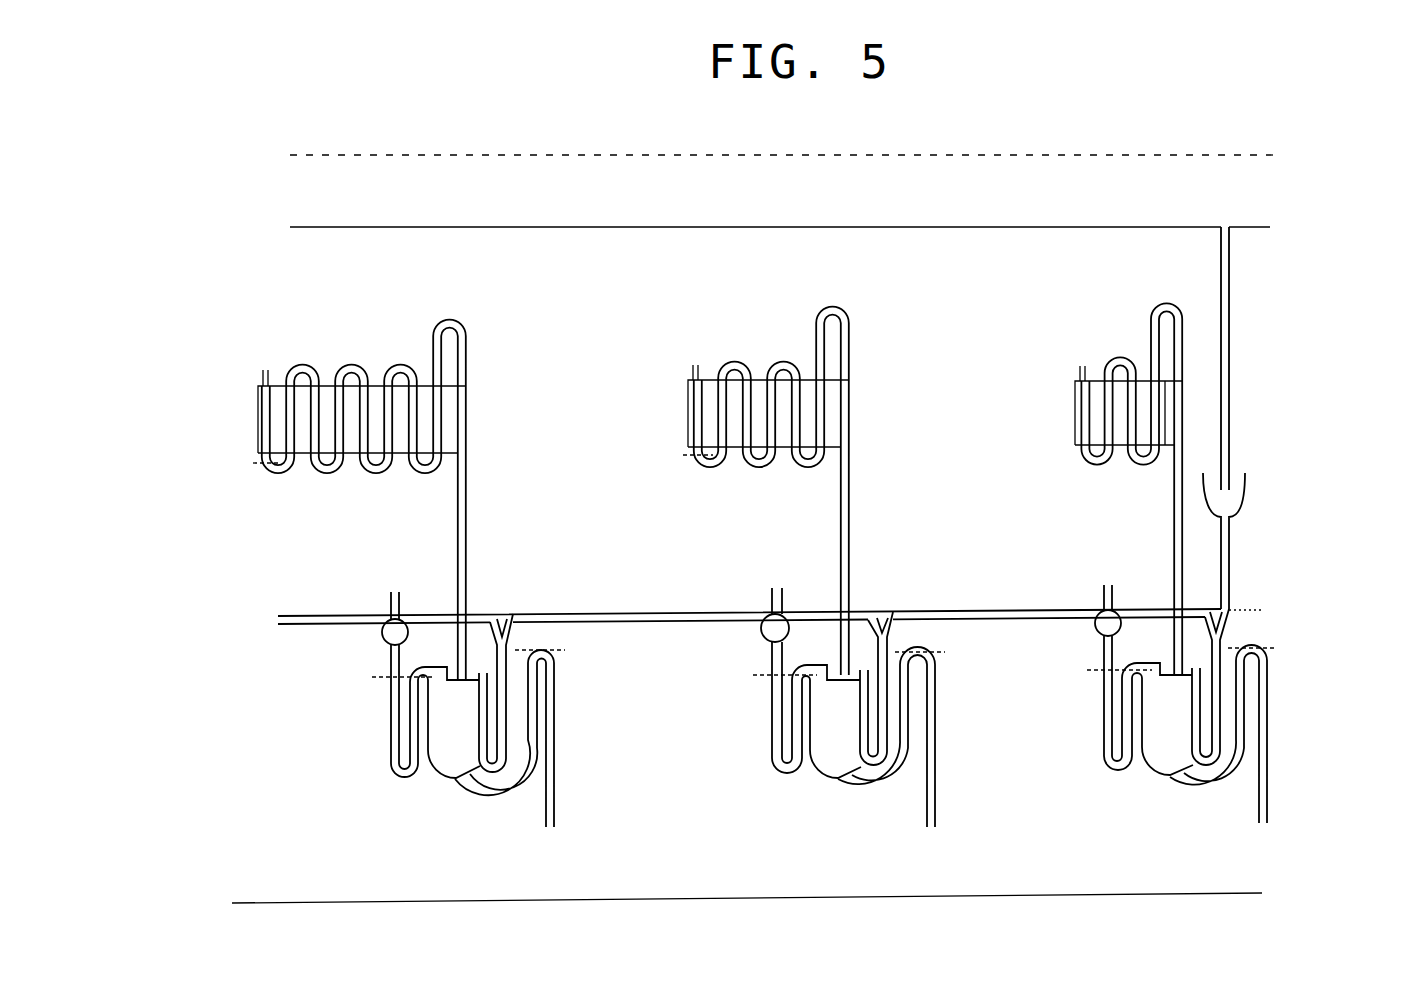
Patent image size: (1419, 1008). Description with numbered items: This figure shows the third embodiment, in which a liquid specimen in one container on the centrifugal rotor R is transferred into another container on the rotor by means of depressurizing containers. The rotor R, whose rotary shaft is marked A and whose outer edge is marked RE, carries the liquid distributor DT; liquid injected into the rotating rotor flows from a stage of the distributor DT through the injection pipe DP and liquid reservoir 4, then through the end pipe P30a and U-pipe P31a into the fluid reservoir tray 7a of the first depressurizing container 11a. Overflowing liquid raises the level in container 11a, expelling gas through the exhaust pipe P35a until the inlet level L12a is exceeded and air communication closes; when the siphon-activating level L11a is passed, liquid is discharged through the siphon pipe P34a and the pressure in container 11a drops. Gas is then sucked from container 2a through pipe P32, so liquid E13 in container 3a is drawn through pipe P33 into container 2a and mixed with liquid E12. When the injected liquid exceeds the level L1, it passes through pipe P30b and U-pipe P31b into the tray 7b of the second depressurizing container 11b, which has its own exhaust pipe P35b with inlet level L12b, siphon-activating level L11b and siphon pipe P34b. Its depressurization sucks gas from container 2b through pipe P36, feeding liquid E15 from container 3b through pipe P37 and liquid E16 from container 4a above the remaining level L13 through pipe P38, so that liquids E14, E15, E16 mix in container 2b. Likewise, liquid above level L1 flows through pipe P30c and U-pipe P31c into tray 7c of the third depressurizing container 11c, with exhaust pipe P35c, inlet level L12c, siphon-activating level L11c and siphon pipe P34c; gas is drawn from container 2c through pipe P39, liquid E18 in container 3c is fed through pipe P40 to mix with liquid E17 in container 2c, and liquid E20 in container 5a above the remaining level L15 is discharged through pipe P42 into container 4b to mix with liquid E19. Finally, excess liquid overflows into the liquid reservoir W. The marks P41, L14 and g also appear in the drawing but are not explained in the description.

The rotary shaft A is at (1301, 155).
The liquid distributor DT is at (1301, 227).
The injection pipe DP is at (1231, 367).
The liquid reservoir 4 is at (1247, 491).
The level L1 is at (1265, 609).
The outer edge RE is at (1298, 893).
The liquid reservoir W is at (273, 627).
The gravity direction g is at (168, 726).
The centrifugal rotor R is at (938, 480).
The pipe P39 is at (450, 317).
The pipe P40 is at (401, 362).
The pipe P41 is at (352, 362).
The pipe P42 is at (303, 362).
The liquid E17 is at (448, 446).
The liquid E18 is at (393, 452).
The liquid E19 is at (316, 449).
The liquid E20 is at (266, 452).
The container 5a is at (278, 477).
The container 4b is at (327, 477).
The container 3c is at (376, 477).
The container 2c is at (425, 477).
The liquid level L14 is at (355, 471).
The remaining liquid level L15 is at (258, 473).
The exhaust pipe P35c is at (405, 781).
The liquid reservoir tray 7c is at (445, 666).
The depressurizing container 11c is at (452, 782).
The U-pipe P31c is at (509, 730).
The siphon pipe P34c is at (557, 797).
The siphon-activating level L11c is at (567, 650).
The inlet level L12c is at (377, 681).
The pipe P30c is at (538, 612).
The pipe P36 is at (832, 304).
The pipe P37 is at (783, 359).
The pipe P38 is at (734, 359).
The liquid E14 is at (828, 446).
The liquid E15 is at (774, 446).
The liquid E16 is at (699, 444).
The container 4a is at (710, 471).
The container 3b is at (759, 471).
The container 2b is at (808, 471).
The remaining liquid level L13 is at (688, 465).
The exhaust pipe P35b is at (787, 777).
The liquid reservoir tray 7b is at (826, 664).
The depressurizing container 11b is at (836, 779).
The U-pipe P31b is at (889, 732).
The siphon pipe P34b is at (937, 787).
The siphon-activating level L11b is at (947, 652).
The inlet level L12b is at (761, 678).
The pipe P30b is at (933, 609).
The pipe P32 is at (1166, 300).
The pipe P33 is at (1120, 354).
The liquid E12 is at (1129, 442).
The liquid E13 is at (1076, 446).
The container 3a is at (1097, 469).
The container 2a is at (1143, 469).
The exhaust pipe P35a is at (1118, 774).
The fluid reservoir tray 7a is at (1159, 662).
The depressurizing container 11a is at (1167, 777).
The U-pipe P31a is at (1222, 722).
The siphon pipe P34a is at (1269, 780).
The siphon-activating level L11a is at (1280, 648).
The inlet level L12a is at (1092, 673).
The end pipe P30a is at (1227, 626).